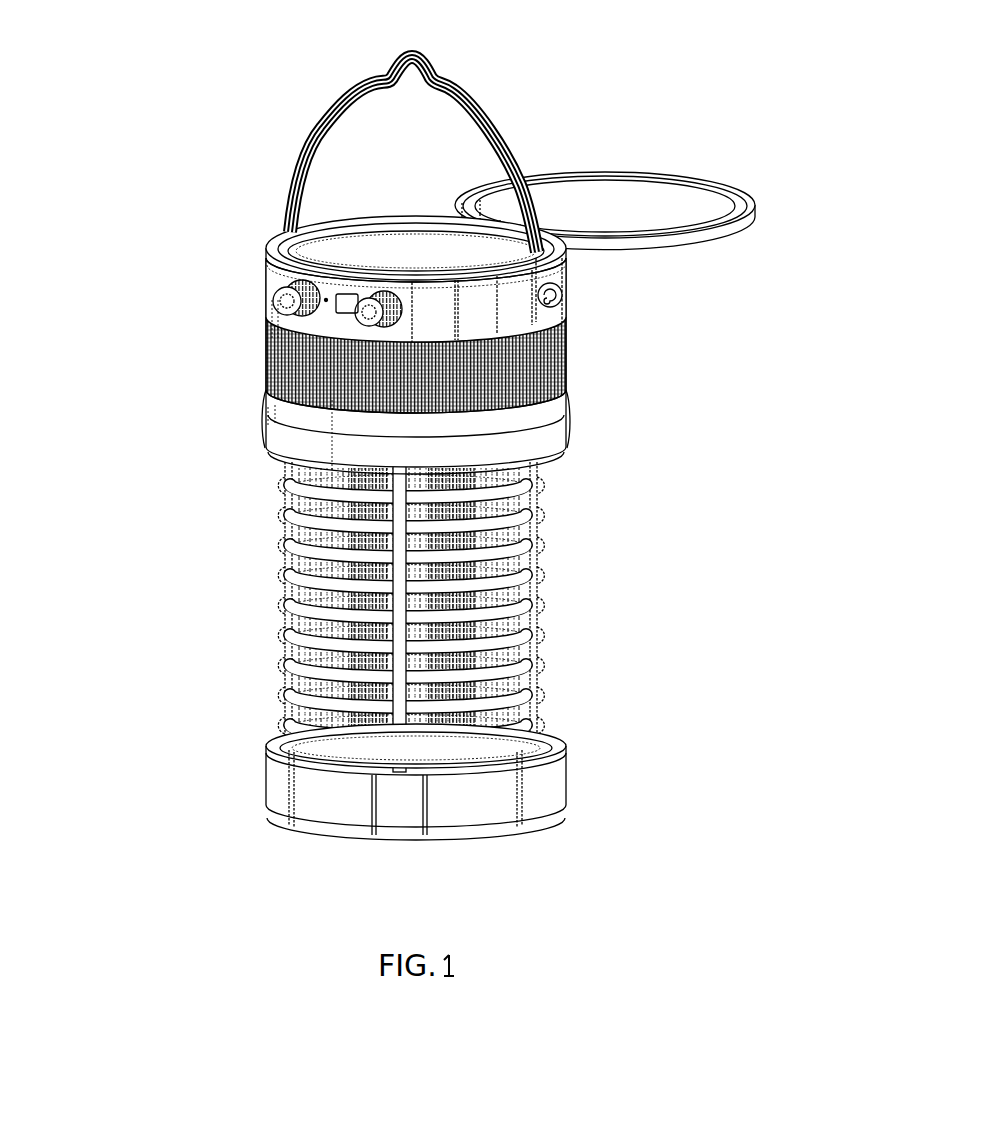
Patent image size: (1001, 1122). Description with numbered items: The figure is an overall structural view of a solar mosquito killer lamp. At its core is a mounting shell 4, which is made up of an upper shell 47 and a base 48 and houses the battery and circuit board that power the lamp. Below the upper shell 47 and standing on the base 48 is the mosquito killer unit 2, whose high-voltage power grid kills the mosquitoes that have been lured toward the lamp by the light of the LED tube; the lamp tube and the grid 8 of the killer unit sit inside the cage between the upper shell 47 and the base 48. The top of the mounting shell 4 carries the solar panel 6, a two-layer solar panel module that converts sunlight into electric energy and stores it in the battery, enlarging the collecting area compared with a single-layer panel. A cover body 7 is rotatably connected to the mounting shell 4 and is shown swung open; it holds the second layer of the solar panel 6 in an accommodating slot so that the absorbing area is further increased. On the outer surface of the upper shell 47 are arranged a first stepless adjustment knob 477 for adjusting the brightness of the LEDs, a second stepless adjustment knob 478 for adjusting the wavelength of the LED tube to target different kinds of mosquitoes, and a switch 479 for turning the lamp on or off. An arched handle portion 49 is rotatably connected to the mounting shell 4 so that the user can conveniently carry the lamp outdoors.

The mosquito killer unit 2 is at (345, 603).
The mounting shell 4 is at (246, 428).
The solar panel 6 is at (396, 240).
The cover body 7 is at (683, 243).
The lamp assembly 8 is at (555, 597).
The upper shell 47 is at (282, 273).
The first stepless adjustment knob 477 is at (300, 312).
The second stepless adjustment knob 478 is at (563, 340).
The switch 479 is at (560, 412).
The base 48 is at (333, 803).
The handle portion 49 is at (497, 117).